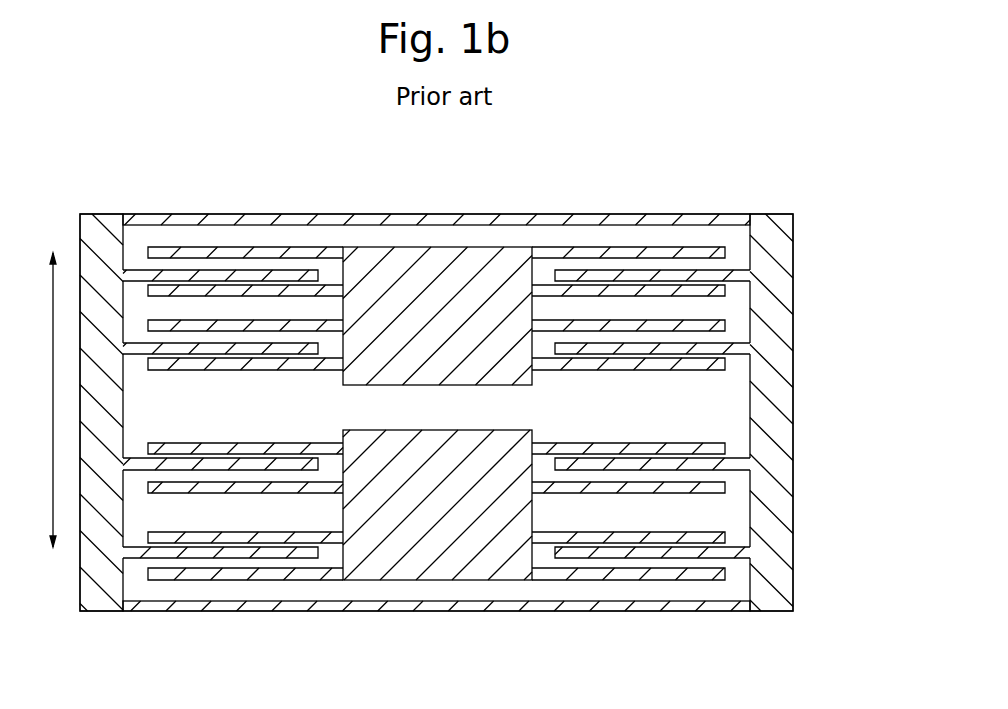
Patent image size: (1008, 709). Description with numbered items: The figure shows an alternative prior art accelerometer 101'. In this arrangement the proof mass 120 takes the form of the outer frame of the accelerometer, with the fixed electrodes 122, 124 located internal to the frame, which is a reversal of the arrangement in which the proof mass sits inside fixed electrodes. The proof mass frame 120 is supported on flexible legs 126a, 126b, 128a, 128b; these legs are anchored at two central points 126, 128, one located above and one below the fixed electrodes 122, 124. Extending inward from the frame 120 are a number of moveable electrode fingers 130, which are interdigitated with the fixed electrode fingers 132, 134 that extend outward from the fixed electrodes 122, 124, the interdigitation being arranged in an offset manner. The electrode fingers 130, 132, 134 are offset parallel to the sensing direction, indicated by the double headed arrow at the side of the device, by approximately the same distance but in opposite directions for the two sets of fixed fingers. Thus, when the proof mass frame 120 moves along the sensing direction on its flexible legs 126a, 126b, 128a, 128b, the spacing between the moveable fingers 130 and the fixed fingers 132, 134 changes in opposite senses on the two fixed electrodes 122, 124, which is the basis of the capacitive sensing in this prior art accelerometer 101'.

The prior art MEMS sensor structure 101' is at (476, 354).
The proof mass 120 is at (102, 232).
The fixed electrode 122 is at (410, 285).
The fixed electrode 124 is at (423, 553).
The central anchor point 126 is at (478, 220).
The flexible leg 126a is at (320, 220).
The flexible leg 126b is at (645, 220).
The central anchor point 128 is at (477, 612).
The flexible leg 128a is at (233, 603).
The flexible leg 128b is at (640, 610).
The moveable electrode finger 130 is at (163, 272).
The fixed electrode finger 132 is at (237, 250).
The fixed electrode finger 134 is at (295, 578).